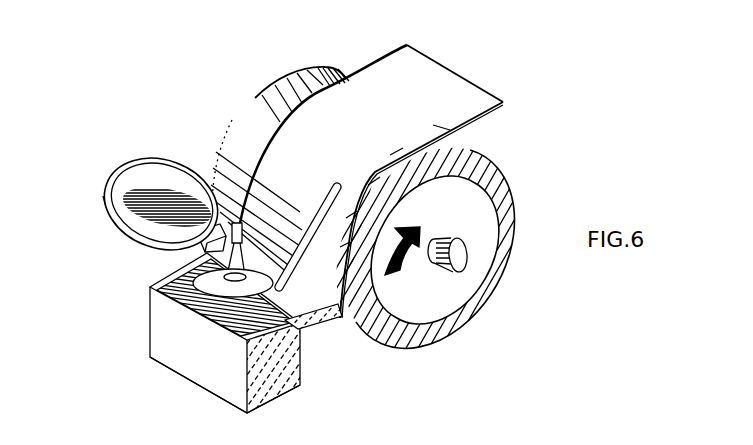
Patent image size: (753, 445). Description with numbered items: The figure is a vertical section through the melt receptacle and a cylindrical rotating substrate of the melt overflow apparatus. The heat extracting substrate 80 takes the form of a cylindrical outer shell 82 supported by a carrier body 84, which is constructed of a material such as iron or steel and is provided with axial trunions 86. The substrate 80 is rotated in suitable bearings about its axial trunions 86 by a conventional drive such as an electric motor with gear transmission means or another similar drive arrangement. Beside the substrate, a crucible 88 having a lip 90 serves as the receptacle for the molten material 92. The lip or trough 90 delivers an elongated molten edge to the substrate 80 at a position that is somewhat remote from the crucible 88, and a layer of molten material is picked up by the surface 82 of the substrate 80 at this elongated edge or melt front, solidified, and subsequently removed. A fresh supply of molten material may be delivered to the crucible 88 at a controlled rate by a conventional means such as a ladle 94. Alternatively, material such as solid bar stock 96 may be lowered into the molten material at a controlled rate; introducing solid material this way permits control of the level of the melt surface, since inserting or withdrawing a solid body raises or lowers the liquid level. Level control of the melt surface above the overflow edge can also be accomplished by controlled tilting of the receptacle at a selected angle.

The heat extracting substrate 80 is at (390, 335).
The cylindrical outer shell 82 is at (480, 155).
The carrier body 84 is at (437, 293).
The axial trunions 86 is at (455, 238).
The crucible 88 is at (190, 350).
The lip 90 is at (323, 323).
The molten material 92 is at (227, 397).
The ladle 94 is at (155, 173).
The solid bar stock 96 is at (284, 203).